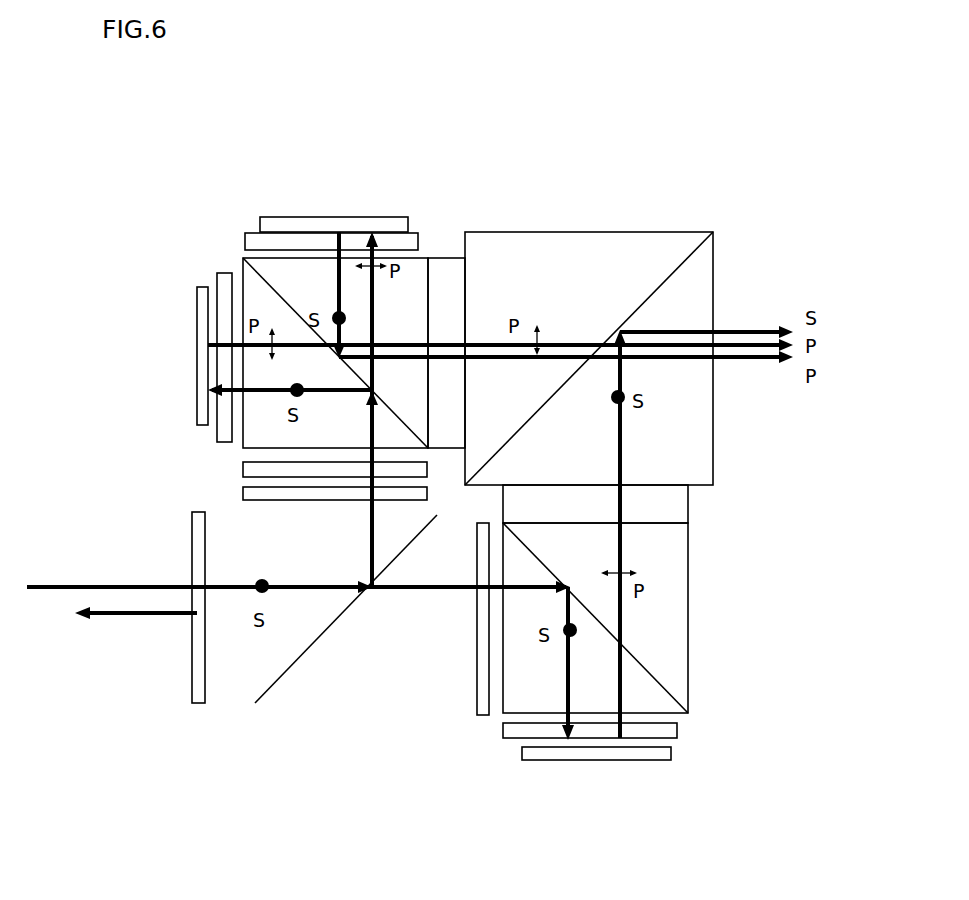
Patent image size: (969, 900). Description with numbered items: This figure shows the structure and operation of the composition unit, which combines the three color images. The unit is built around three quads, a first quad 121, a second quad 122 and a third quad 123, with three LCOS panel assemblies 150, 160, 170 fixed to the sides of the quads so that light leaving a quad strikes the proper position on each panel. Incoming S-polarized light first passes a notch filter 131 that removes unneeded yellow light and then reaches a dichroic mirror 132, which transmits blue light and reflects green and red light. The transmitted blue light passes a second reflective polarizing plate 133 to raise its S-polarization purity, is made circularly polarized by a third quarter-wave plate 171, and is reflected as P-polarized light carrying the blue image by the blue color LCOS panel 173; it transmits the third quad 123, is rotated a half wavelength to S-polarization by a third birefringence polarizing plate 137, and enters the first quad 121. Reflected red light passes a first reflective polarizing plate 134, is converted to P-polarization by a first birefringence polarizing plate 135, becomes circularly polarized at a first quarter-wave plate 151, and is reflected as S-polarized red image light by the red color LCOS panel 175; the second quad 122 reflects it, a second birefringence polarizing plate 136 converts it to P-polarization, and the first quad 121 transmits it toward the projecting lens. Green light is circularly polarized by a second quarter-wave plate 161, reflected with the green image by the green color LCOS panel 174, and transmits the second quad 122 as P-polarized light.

The first quad 121 is at (660, 245).
The second quad 122 is at (412, 297).
The third quad 123 is at (670, 615).
The notch filter 131 is at (192, 665).
The dichroic mirror 132 is at (325, 632).
The second reflective polarizing plate 133 is at (480, 668).
The first reflective polarizing plate 134 is at (292, 493).
The first birefringence polarizing plate 135 is at (243, 470).
The second birefringence polarizing plate 136 is at (448, 277).
The third birefringence polarizing plate 137 is at (678, 502).
The LCOS panel assembly 150 is at (295, 193).
The first quarter-wave plate 151 is at (245, 243).
The LCOS panel assembly 160 is at (162, 374).
The second quarter-wave plate 161 is at (223, 282).
The LCOS panel assembly 170 is at (630, 786).
The third quarter-wave plate 171 is at (670, 730).
The blue color LCOS panel 173 is at (547, 755).
The green color LCOS panel 174 is at (198, 325).
The red color LCOS panel 175 is at (330, 217).